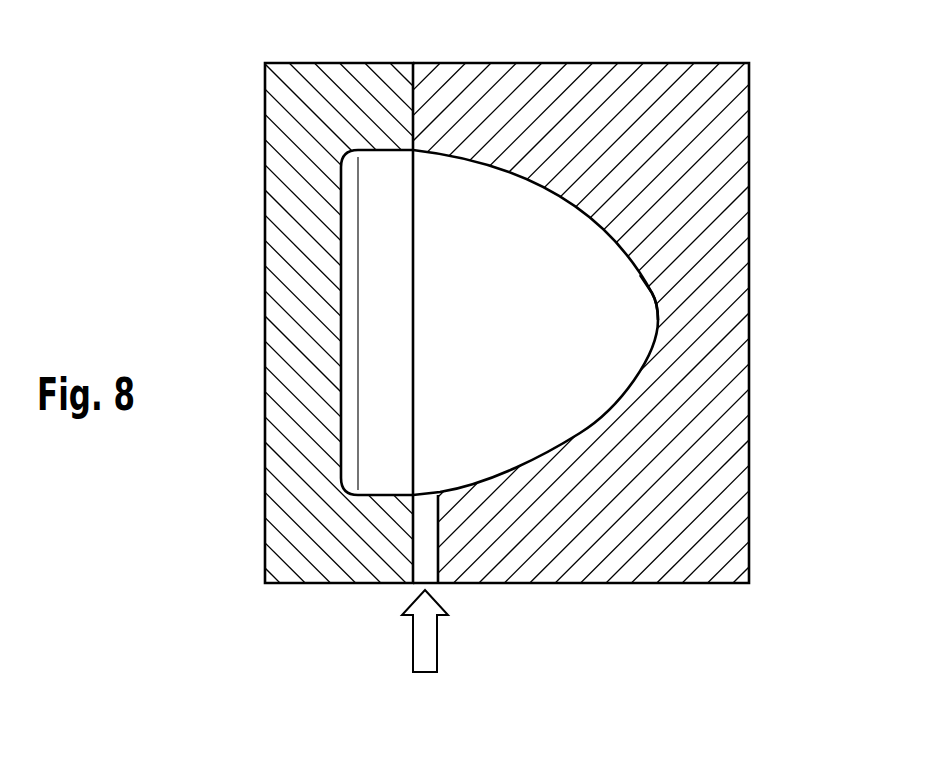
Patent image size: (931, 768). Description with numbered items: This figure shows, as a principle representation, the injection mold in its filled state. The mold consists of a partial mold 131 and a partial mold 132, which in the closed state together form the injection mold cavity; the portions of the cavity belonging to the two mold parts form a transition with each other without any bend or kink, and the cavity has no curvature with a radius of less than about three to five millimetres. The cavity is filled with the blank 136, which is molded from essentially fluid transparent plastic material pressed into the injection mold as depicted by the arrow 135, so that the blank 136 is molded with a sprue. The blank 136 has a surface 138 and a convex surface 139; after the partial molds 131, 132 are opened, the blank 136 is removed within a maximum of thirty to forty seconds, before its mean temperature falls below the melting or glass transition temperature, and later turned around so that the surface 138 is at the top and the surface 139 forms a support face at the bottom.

The partial mold 131 is at (338, 98).
The partial mold 132 is at (624, 123).
The blank 136 is at (472, 190).
The surface of the blank 138 is at (339, 249).
The surface of the blank 139 is at (653, 293).
The arrow 135 is at (426, 635).